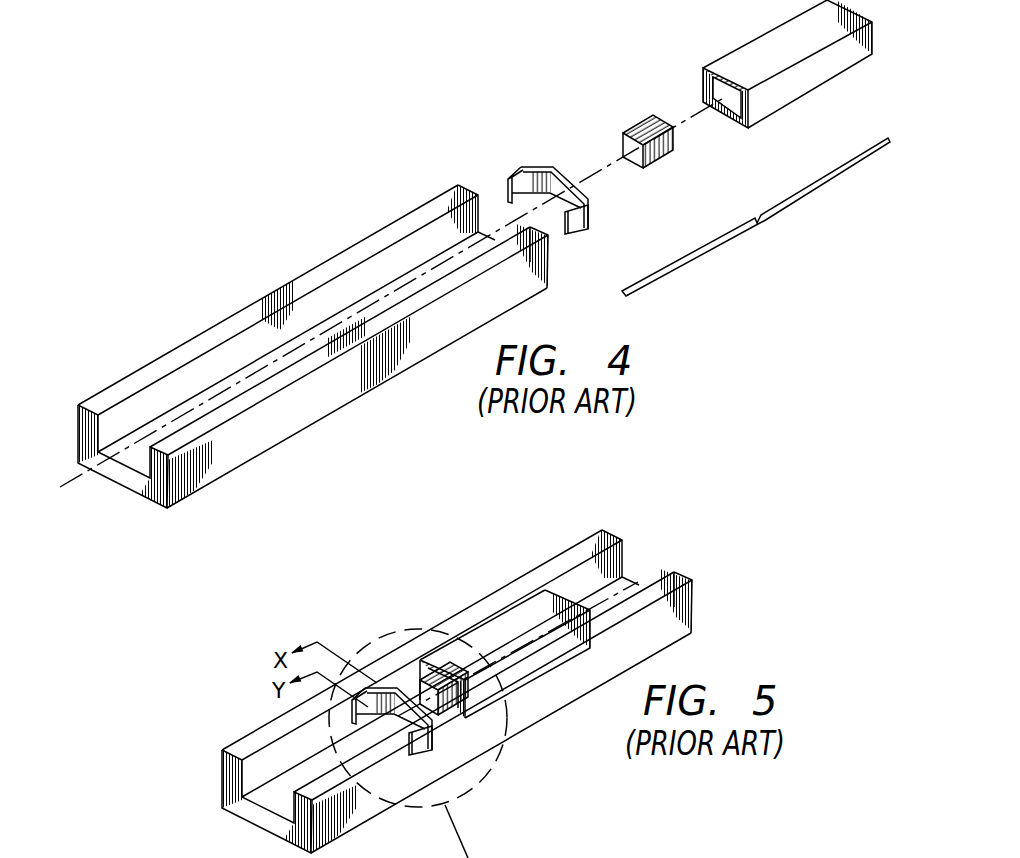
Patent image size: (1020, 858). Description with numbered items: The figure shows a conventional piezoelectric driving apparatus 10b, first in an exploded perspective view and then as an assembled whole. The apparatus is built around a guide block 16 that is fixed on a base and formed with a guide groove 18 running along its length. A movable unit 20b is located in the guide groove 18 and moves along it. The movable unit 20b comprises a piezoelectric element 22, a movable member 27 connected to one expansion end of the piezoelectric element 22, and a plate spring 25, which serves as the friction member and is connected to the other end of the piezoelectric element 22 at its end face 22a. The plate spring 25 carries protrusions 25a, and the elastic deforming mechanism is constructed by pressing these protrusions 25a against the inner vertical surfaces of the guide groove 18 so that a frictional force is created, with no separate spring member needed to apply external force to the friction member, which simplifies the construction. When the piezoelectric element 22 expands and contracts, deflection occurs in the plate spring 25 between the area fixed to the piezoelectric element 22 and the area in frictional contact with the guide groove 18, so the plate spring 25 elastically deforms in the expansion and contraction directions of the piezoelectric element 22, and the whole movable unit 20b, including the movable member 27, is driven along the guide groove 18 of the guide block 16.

In FIG. 4, the driving apparatus 10b is at (390, 178).
In FIG. 4, the guide block 16 is at (337, 403).
In FIG. 5, the guide block 16 is at (362, 812).
In FIG. 4, the guide groove 18 is at (132, 415).
In FIG. 5, the guide groove 18 is at (265, 763).
In FIG. 4, the movable unit 20b is at (756, 217).
In FIG. 4, the piezoelectric element 22 is at (658, 162).
In FIG. 5, the piezoelectric element 22 is at (410, 683).
In FIG. 4, the end face of ferrule block 22a is at (627, 145).
In FIG. 4, the plate spring 25 is at (590, 195).
In FIG. 5, the plate spring 25 is at (427, 730).
In FIG. 4, the protrusion 25a is at (507, 190).
In FIG. 4, the movable member 27 is at (800, 82).
In FIG. 5, the movable member 27 is at (490, 630).